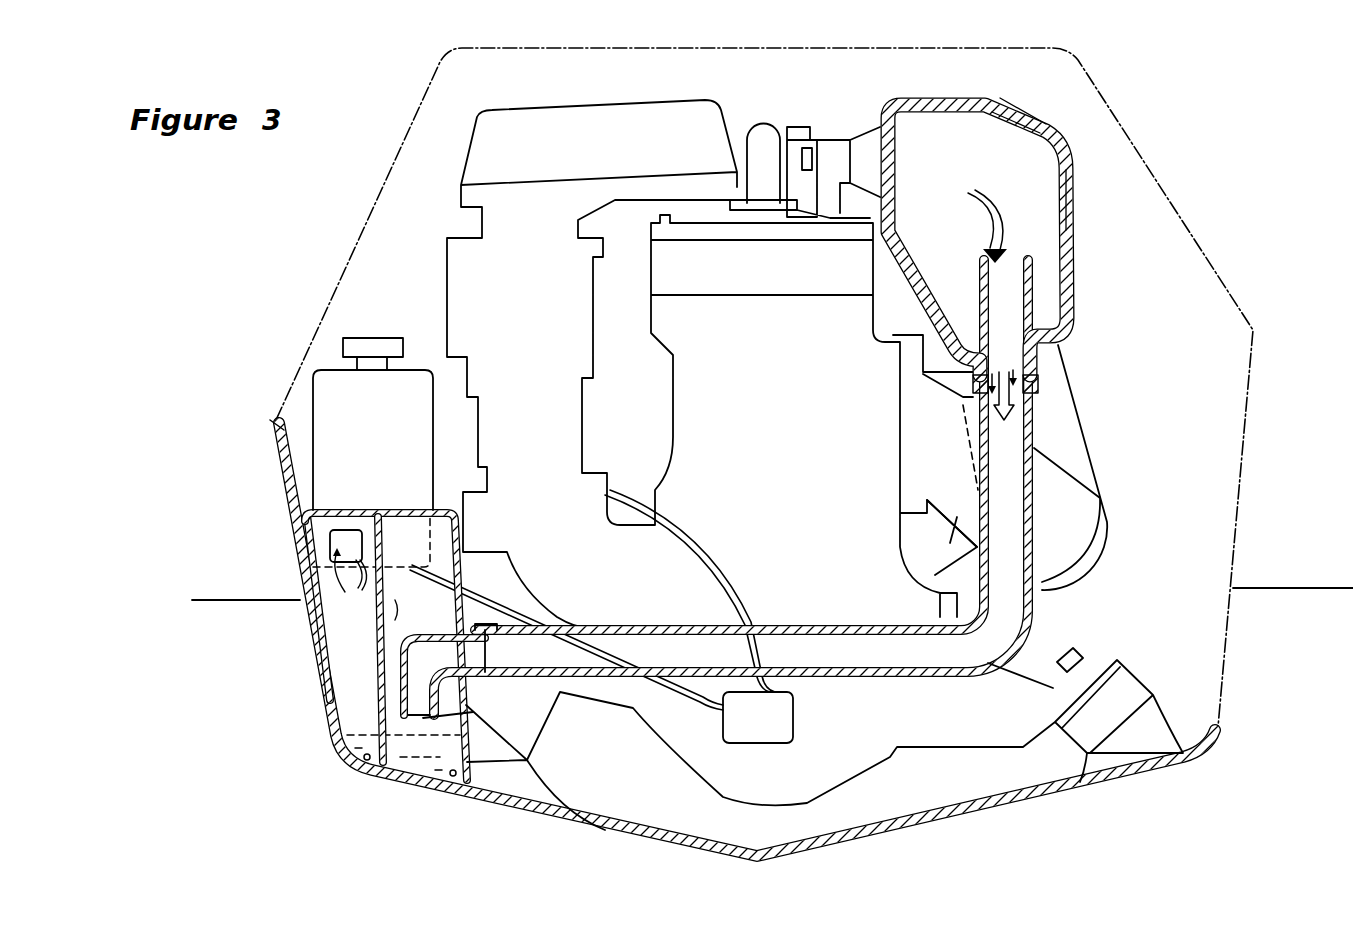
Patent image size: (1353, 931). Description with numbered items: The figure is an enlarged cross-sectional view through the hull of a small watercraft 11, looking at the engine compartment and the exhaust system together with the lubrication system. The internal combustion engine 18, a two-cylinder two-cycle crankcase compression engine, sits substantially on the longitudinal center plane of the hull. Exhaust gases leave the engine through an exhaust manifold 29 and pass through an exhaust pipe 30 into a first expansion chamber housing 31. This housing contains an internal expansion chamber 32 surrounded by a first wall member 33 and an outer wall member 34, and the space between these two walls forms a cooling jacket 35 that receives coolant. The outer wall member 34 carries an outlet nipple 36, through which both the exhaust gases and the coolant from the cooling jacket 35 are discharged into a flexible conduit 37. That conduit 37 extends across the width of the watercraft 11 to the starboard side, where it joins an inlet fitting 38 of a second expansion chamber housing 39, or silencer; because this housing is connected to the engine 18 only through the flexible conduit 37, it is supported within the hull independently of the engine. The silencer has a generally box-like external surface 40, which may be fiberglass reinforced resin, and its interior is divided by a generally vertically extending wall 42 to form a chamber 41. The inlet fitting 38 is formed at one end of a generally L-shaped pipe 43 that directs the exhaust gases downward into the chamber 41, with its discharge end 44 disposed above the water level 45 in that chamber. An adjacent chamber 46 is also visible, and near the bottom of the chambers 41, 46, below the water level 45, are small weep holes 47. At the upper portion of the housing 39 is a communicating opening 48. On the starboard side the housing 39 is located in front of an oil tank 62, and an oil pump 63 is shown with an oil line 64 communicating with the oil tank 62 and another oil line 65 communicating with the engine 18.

The watercraft 11 is at (390, 84).
The internal combustion engine 18 is at (771, 110).
The exhaust manifold 29 is at (952, 539).
The exhaust pipe 30 is at (1063, 420).
The first expansion chamber housing 31 is at (952, 82).
The internal expansion chamber 32 is at (950, 211).
The first wall member 33 is at (1003, 117).
The outer wall member 34 is at (1043, 117).
The cooling jacket 35 is at (1067, 203).
The outlet nipple 36 is at (1033, 367).
The flexible conduit 37 is at (872, 625).
The inlet fitting 38 is at (487, 637).
The second expansion chamber housing 39 is at (344, 500).
The external surface 40 is at (370, 512).
The chamber 41 is at (443, 620).
The vertically extending wall 42 is at (380, 697).
The L-shaped pipe 43 is at (394, 597).
The discharge end 44 is at (473, 712).
The water level 45 is at (328, 713).
The chamber 46 is at (363, 633).
The weep holes 47 is at (372, 772).
The communicating opening 48 is at (326, 538).
The oil tank 62 is at (312, 370).
The oil pump 63 is at (793, 725).
The oil line 64 is at (715, 705).
The oil line 65 is at (700, 548).